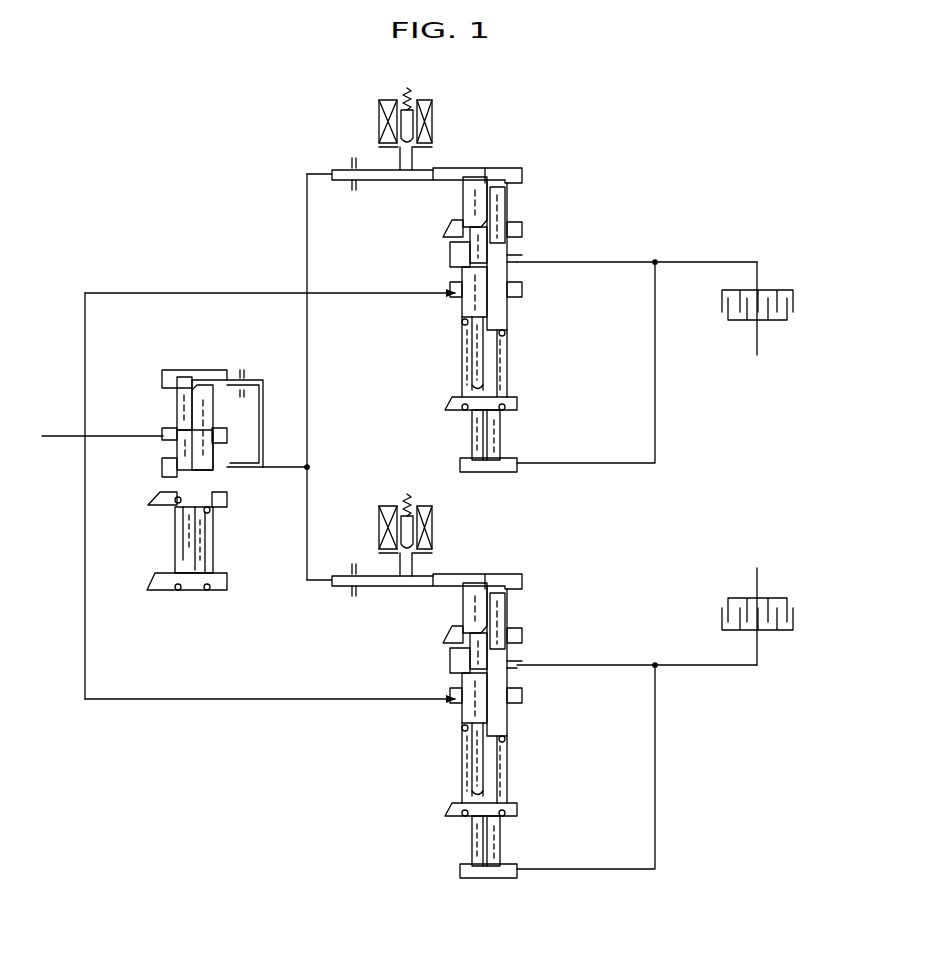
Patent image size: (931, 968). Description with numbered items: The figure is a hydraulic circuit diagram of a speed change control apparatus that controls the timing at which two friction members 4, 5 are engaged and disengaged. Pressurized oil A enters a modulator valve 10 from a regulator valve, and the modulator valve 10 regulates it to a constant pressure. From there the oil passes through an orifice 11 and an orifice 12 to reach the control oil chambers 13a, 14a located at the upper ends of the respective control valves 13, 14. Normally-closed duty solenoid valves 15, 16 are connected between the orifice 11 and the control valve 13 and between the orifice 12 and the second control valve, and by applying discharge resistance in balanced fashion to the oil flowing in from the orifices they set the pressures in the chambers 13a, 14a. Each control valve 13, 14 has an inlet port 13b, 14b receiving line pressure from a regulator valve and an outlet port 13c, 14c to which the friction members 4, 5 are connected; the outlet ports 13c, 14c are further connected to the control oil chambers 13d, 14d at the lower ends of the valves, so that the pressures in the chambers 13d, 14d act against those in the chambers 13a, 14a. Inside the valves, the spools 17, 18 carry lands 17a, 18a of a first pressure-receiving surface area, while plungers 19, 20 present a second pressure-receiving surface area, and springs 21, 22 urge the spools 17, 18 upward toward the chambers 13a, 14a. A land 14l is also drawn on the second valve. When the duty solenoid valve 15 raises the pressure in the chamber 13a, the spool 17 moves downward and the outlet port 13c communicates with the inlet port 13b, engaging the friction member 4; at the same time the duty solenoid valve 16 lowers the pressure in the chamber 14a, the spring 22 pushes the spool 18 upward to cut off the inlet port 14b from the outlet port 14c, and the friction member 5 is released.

The pressurized oil A is at (60, 434).
The modulator valve 10 is at (187, 369).
The orifice 11 is at (355, 150).
The orifice 12 is at (370, 566).
The control valve 13 is at (494, 162).
The control oil chamber 13a is at (523, 177).
The inlet port 13b is at (452, 298).
The outlet port 13c is at (522, 256).
The control oil chamber 13d is at (478, 466).
The control valve 14 is at (477, 670).
The control oil chamber 14a is at (531, 576).
The inlet port 14b is at (444, 692).
The outlet port 14c is at (542, 652).
The control oil chamber 14d is at (488, 894).
The land of second valve 14l is at (425, 626).
The duty solenoid valve 15 is at (434, 132).
The duty solenoid valve 16 is at (419, 535).
The spool 17 is at (478, 241).
The land 17a is at (501, 216).
The spool 18 is at (446, 626).
The land 18a is at (523, 621).
The plunger 19 is at (473, 426).
The plunger 20 is at (459, 841).
The spring 21 is at (463, 325).
The spring 22 is at (460, 763).
The friction member 4 is at (794, 303).
The friction member 5 is at (794, 622).